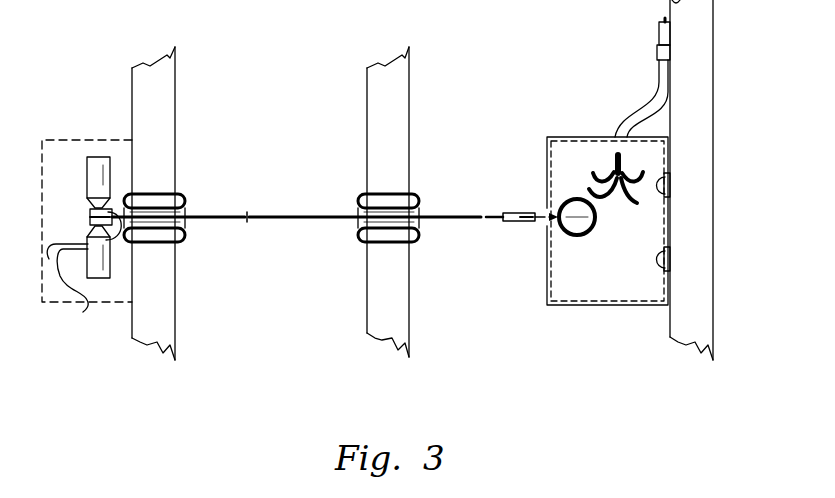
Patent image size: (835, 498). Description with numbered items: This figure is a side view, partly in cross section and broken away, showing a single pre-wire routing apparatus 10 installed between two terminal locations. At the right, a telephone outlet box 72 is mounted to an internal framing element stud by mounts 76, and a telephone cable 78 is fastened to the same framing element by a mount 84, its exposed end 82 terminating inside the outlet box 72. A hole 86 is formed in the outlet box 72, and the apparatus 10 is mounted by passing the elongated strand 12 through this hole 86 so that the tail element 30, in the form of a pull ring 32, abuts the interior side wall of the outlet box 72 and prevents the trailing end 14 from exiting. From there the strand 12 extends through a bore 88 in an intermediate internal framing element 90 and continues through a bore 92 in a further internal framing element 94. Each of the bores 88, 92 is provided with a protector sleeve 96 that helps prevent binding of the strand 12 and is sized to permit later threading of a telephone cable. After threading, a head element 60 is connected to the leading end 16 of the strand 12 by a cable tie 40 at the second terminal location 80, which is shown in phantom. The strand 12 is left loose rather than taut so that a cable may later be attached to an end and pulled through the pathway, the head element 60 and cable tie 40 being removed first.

The pre-wire routing apparatus 10 is at (283, 144).
The elongated strand 12 is at (208, 215).
The trailing end 14 is at (533, 227).
The leading end 16 is at (95, 219).
The tail element 30 is at (578, 238).
The pull ring 32 is at (580, 218).
The cable tie 40 is at (85, 312).
The head element 60 is at (98, 172).
The telephone outlet box 72 is at (557, 137).
The mounts 76 is at (668, 195).
The telephone cable 78 is at (658, 28).
The second terminal location 80 is at (86, 128).
The exposed end 82 is at (612, 157).
The mount 84 is at (657, 52).
The hole 86 is at (546, 212).
The bore 88 is at (390, 205).
The intermediate internal framing element 90 is at (392, 118).
The bore 92 is at (158, 205).
The internal framing element 94 is at (165, 135).
The protector sleeve 96 is at (187, 236).